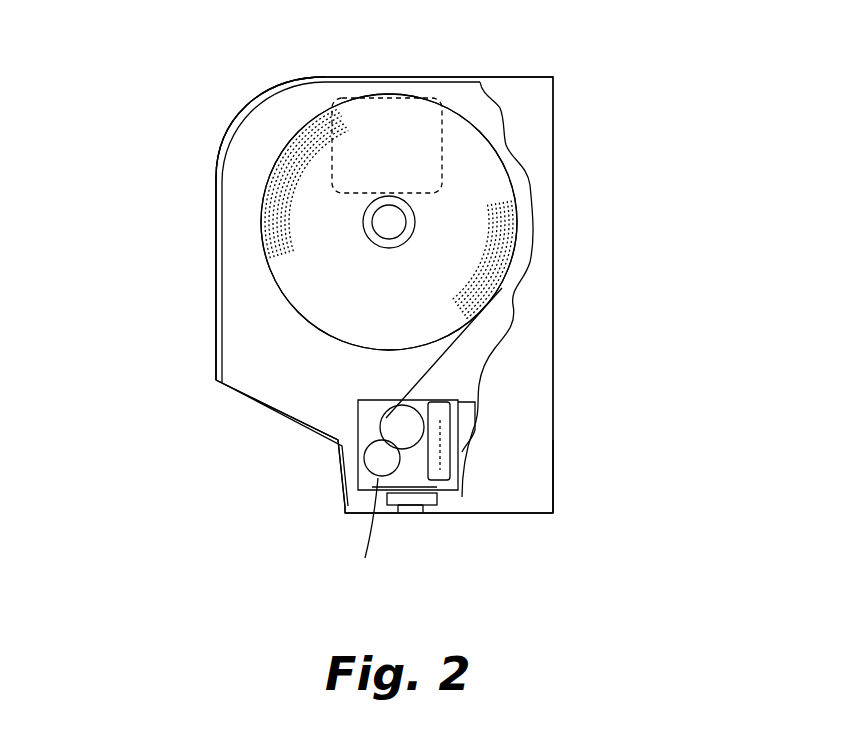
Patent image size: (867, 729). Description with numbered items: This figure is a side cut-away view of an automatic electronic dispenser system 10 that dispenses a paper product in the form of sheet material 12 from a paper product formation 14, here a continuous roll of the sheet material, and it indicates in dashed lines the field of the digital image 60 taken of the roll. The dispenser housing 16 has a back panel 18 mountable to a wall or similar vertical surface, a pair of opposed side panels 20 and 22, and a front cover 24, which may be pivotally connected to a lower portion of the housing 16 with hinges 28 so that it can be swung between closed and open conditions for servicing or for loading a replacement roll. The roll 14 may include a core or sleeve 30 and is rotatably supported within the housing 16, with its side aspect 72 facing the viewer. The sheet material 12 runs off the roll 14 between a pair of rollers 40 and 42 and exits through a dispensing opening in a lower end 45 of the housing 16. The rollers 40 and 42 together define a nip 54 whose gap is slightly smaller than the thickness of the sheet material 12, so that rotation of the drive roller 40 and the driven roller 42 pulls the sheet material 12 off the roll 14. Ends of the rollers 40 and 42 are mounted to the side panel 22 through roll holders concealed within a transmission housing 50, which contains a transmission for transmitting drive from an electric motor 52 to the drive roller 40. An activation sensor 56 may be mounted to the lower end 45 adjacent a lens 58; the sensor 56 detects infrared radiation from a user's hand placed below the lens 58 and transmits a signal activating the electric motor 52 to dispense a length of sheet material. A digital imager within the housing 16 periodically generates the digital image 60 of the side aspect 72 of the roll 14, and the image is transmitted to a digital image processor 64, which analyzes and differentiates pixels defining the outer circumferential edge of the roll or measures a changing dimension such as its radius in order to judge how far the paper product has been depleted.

The automatic electronic dispenser system 10 is at (228, 88).
The sheet material 12 is at (355, 548).
The paper product formation 14 is at (403, 117).
The dispenser housing 16 is at (515, 357).
The back panel 18 is at (552, 238).
The side panel 20 is at (540, 468).
The side panel 22 is at (293, 360).
The front cover 24 is at (212, 300).
The hinges 28 is at (345, 514).
The core 30 is at (407, 197).
The roller 40 is at (412, 412).
The roller 42 is at (345, 467).
The lower end 45 is at (530, 514).
The transmission housing 50 is at (433, 488).
The electric motor 52 is at (452, 430).
The nip 54 is at (340, 440).
The activation sensor 56 is at (432, 505).
The lens 58 is at (410, 518).
The digital image 60 is at (320, 148).
The digital image processor 64 is at (473, 412).
The side aspect 72 is at (390, 292).